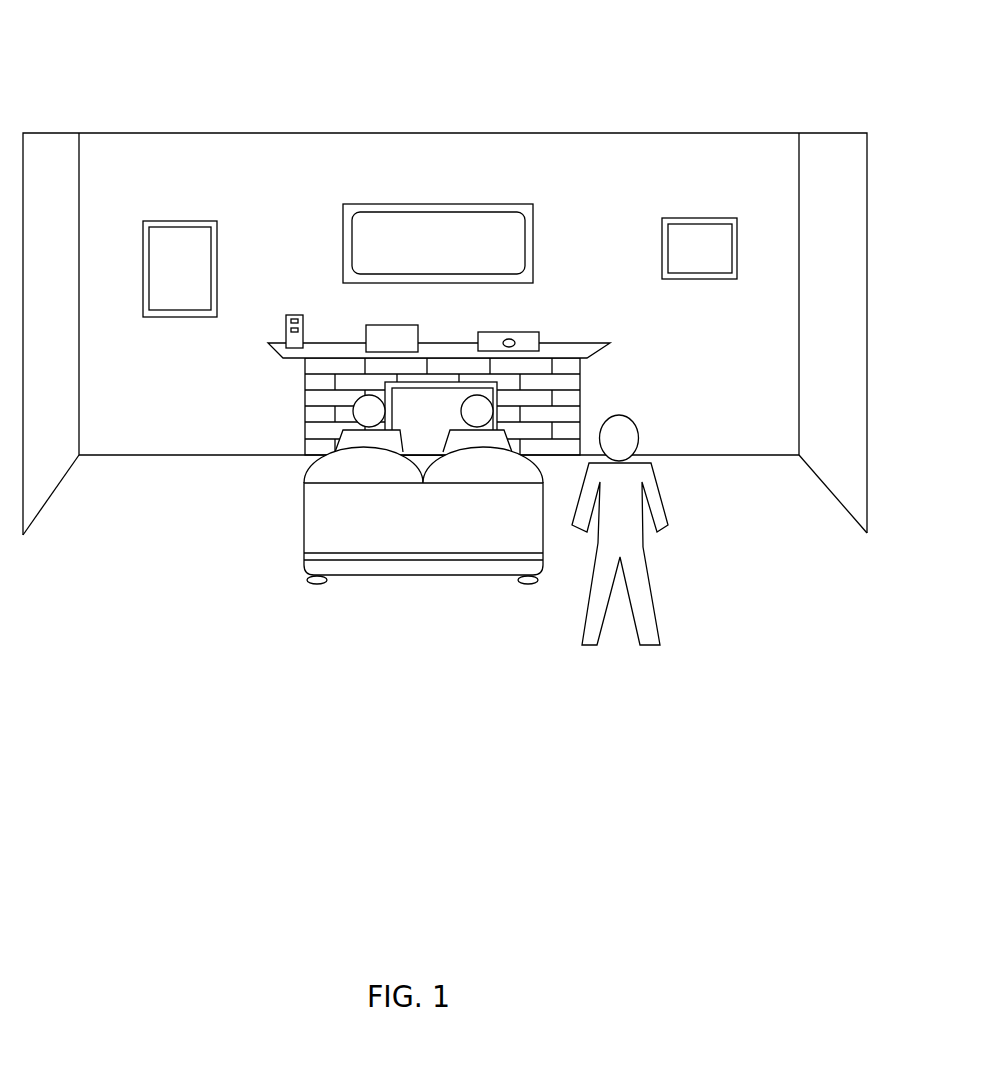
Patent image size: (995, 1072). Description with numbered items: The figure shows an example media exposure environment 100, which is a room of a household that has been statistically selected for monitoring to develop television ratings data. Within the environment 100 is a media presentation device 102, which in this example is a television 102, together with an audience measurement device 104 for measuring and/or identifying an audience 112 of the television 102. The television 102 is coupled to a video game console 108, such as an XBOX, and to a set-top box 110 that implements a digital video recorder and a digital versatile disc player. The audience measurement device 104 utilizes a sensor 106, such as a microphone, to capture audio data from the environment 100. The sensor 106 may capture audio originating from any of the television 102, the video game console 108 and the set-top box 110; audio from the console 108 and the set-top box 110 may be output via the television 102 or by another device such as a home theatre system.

The media exposure environment 100 is at (107, 121).
The media presentation device 102 is at (423, 251).
The audience measurement device 104 is at (538, 332).
The sensor 106 is at (506, 338).
The video game console 108 is at (291, 314).
The set-top box 110 is at (378, 346).
The audience 112 is at (729, 546).